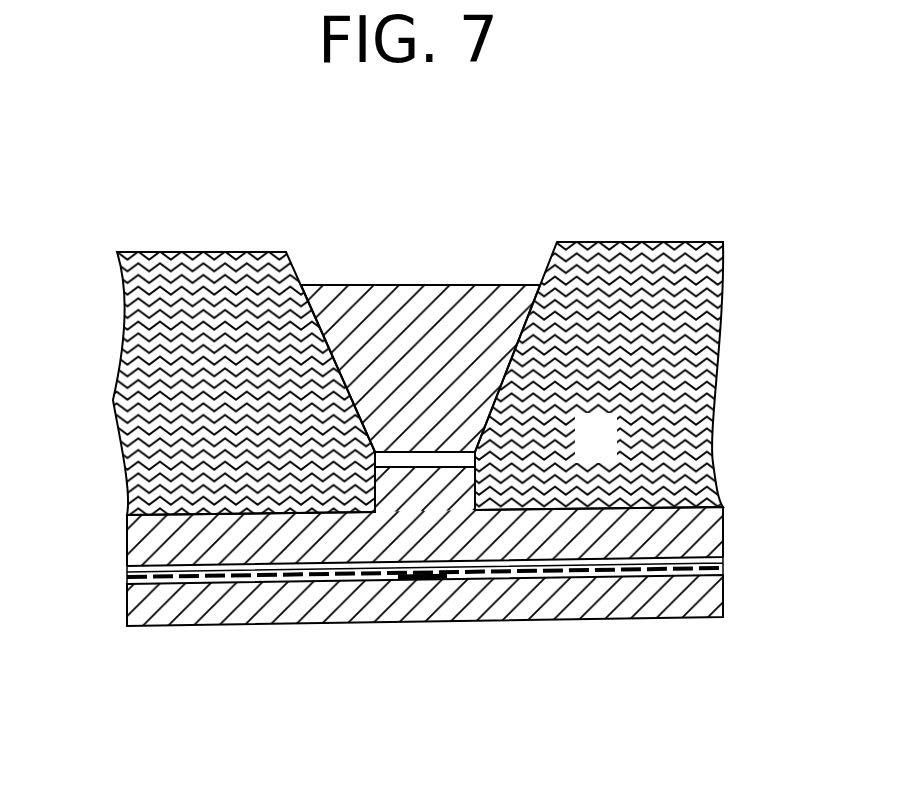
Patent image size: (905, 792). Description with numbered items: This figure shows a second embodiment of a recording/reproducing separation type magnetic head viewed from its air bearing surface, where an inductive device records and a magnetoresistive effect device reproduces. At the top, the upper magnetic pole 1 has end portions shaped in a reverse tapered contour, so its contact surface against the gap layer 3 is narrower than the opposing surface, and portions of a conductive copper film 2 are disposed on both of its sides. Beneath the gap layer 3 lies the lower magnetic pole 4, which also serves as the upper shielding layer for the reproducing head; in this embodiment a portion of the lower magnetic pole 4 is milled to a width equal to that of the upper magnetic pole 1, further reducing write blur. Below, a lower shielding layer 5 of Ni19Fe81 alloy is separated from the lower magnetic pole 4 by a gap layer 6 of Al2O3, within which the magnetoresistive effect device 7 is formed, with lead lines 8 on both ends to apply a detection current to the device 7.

The upper magnetic pole 1 is at (385, 313).
The conductive copper film 2 is at (157, 390).
The gap layer 3 is at (440, 460).
The lower magnetic pole 4 is at (690, 523).
The lower shielding layer 5 is at (536, 596).
The gap layer 6 is at (703, 560).
The magnetoresistive effect device 7 is at (417, 573).
The lead lines 8 is at (723, 570).